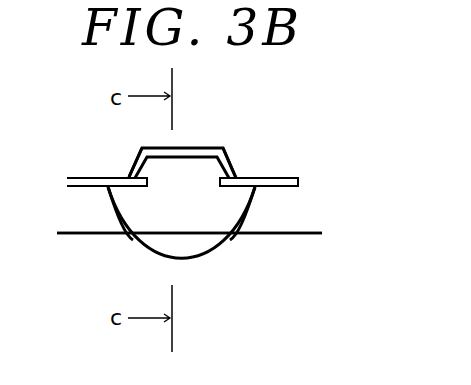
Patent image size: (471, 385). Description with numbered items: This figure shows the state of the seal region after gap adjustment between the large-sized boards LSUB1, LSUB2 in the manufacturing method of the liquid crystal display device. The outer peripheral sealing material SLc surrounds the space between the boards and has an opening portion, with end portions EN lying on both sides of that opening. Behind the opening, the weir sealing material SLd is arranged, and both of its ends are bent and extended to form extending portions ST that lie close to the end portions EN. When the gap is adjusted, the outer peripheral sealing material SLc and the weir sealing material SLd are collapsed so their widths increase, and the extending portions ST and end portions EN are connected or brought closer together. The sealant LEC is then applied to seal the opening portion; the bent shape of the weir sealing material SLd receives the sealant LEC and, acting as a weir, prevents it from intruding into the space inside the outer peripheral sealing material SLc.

The weir sealing material SLd is at (204, 148).
The outer peripheral sealing material SLc is at (293, 178).
The extending portion ST is at (132, 174).
The sealant LEC is at (215, 220).
The end portion EN is at (137, 187).
The large-sized board LSUB1 is at (73, 235).
The large-sized board LSUB2 is at (163, 294).